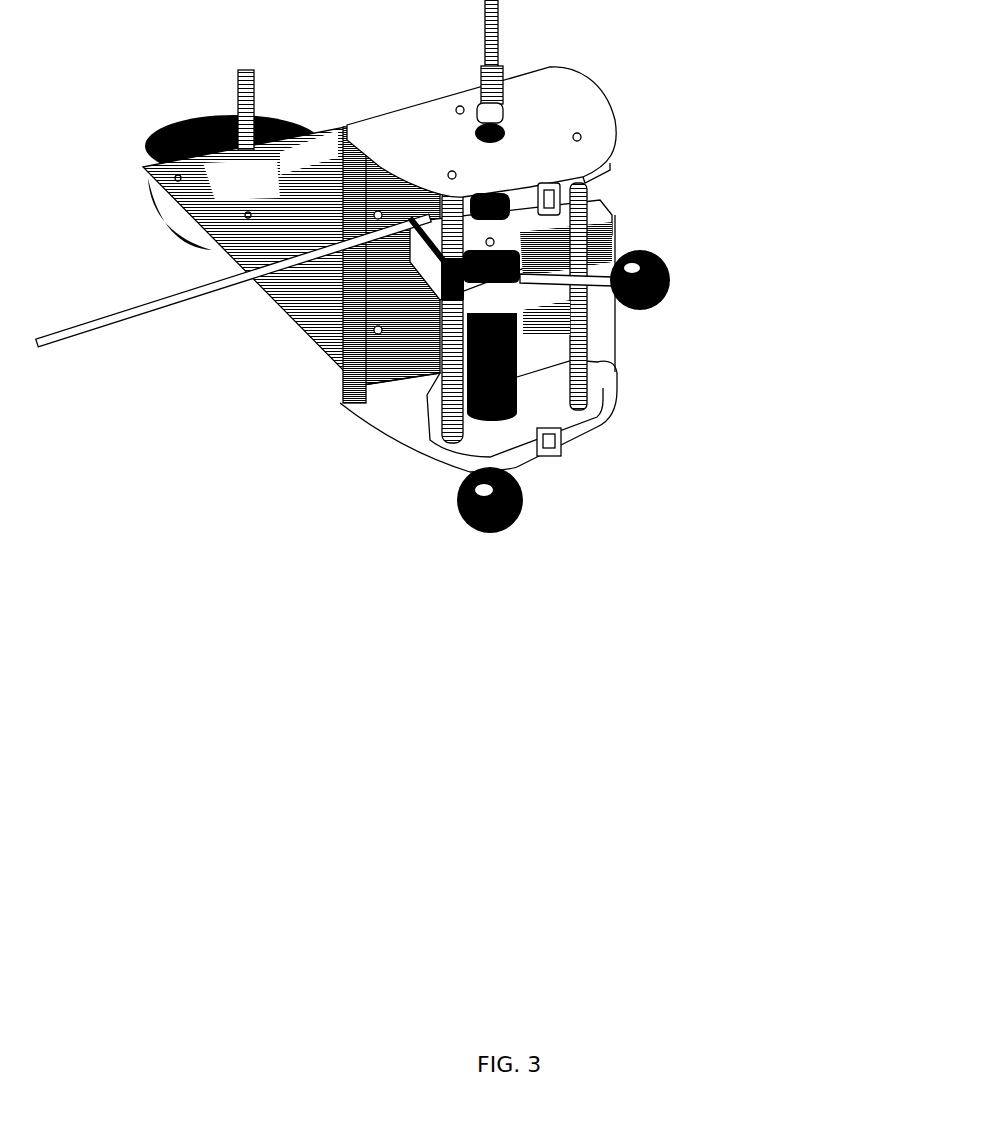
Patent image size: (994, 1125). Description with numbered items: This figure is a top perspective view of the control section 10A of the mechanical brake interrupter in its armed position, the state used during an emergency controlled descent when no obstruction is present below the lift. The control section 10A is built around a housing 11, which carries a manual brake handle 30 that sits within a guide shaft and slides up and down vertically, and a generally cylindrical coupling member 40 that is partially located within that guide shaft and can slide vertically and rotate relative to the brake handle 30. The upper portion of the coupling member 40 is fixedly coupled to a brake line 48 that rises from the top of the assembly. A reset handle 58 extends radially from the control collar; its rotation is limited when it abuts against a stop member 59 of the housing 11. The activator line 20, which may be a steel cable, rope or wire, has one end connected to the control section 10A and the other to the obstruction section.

The control section 10A is at (306, 471).
The housing 11 is at (562, 118).
The activator line 20 is at (135, 318).
The manual brake handle 30 is at (522, 495).
The coupling member 40 is at (527, 343).
The brake line 48 is at (497, 20).
The reset handle 58 is at (670, 288).
The stop member 59 is at (337, 361).